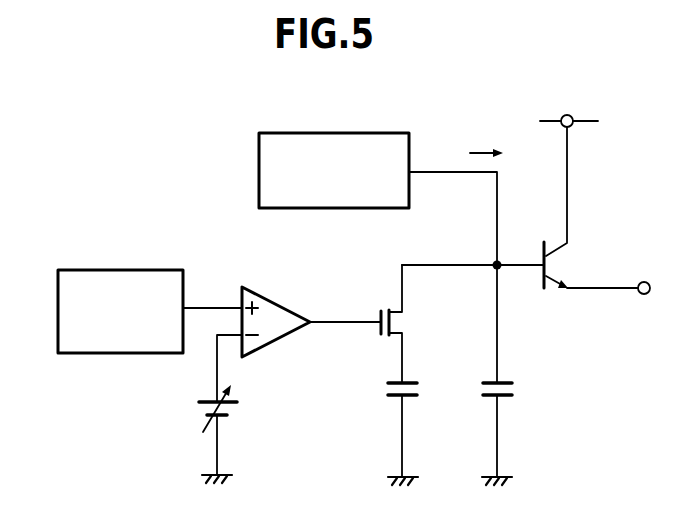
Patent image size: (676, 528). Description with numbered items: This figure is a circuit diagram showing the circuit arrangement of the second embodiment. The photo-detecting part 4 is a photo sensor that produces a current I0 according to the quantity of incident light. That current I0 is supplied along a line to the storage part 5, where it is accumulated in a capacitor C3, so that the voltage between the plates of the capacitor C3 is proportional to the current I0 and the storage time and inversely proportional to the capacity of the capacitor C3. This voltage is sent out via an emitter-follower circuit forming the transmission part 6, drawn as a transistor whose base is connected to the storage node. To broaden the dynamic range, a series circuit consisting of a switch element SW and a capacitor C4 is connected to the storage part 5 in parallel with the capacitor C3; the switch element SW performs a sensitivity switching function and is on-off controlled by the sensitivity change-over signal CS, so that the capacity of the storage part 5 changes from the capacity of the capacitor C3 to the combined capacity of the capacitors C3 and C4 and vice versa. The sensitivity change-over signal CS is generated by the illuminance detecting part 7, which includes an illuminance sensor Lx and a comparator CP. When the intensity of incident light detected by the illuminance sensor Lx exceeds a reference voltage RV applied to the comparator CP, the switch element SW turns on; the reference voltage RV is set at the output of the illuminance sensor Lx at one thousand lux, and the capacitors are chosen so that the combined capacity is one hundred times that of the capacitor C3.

The photo-detecting part 4 is at (355, 133).
The storage part 5 is at (446, 265).
The transmission part 6 is at (557, 263).
The illuminance detecting part 7 is at (254, 351).
The illuminance sensor Lx is at (117, 270).
The comparator CP is at (286, 308).
The sensitivity change-over signal CS is at (345, 310).
The switch element SW is at (400, 322).
The capacitor C4 is at (407, 380).
The capacitor C3 is at (505, 380).
The reference voltage RV is at (230, 408).
The current I0 is at (473, 155).